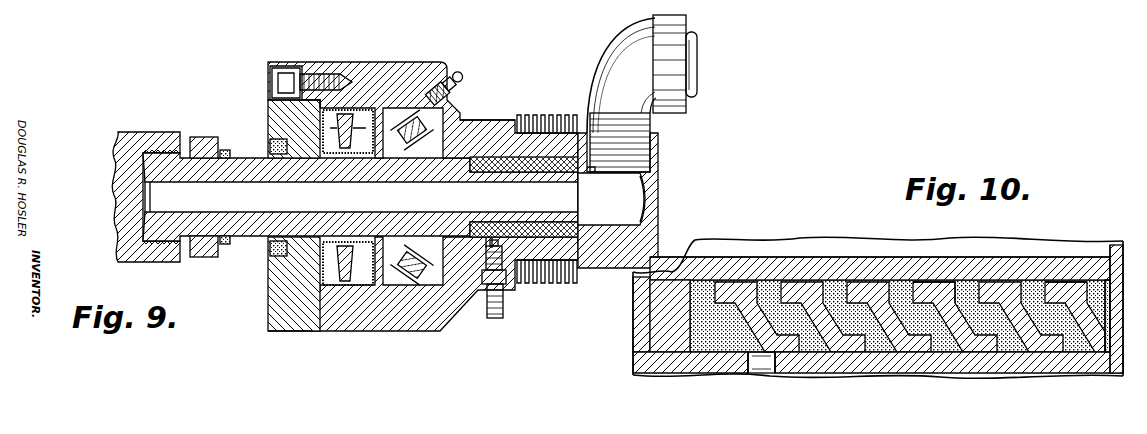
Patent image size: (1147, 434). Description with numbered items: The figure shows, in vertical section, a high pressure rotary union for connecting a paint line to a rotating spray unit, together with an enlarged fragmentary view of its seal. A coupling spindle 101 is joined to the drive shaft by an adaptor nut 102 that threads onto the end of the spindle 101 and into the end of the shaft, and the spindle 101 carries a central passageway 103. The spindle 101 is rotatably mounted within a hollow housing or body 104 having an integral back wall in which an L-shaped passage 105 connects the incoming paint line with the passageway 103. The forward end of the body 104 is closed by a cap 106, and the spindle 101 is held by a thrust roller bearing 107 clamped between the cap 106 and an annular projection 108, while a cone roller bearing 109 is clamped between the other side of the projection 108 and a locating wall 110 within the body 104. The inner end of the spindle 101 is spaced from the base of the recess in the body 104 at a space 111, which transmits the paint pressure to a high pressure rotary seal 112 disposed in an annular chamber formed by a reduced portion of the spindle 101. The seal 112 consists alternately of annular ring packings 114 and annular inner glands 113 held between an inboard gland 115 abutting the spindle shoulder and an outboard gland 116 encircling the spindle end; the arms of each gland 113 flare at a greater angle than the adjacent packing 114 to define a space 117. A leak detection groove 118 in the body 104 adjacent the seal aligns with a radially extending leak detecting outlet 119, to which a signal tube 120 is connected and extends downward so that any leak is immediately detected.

In FIG. 9, the coupling spindle 101 is at (258, 170).
In FIG. 9, the adaptor nut 102 is at (206, 134).
In FIG. 9, the central passageway 103 is at (262, 210).
In FIG. 9, the hollow housing or body 104 is at (492, 118).
In FIG. 9, the L-shaped passage 105 is at (645, 201).
In FIG. 9, the cap 106 is at (270, 296).
In FIG. 9, the thrust roller bearing 107 is at (330, 247).
In FIG. 9, the annular projection 108 is at (398, 108).
In FIG. 9, the cone roller bearing 109 is at (413, 250).
In FIG. 9, the locating wall 110 is at (465, 112).
In FIG. 9, the space at base of recess 111 is at (640, 194).
In FIG. 9, the high pressure rotary seal 112 is at (542, 246).
In FIG. 10, the high pressure rotary seal 112 is at (1032, 276).
In FIG. 10, the annular inner gland 113 is at (795, 300).
In FIG. 10, the annular ring packing 114 is at (952, 305).
In FIG. 10, the inboard gland 115 is at (674, 285).
In FIG. 9, the outboard gland 116 is at (584, 174).
In FIG. 10, the outboard gland 116 is at (1092, 308).
In FIG. 10, the space 117 is at (740, 305).
In FIG. 9, the leak detection groove 118 is at (496, 230).
In FIG. 10, the leak detection groove 118 is at (747, 358).
In FIG. 9, the leak detecting outlet 119 is at (489, 242).
In FIG. 10, the leak detecting outlet 119 is at (764, 368).
In FIG. 9, the signal tube 120 is at (495, 318).